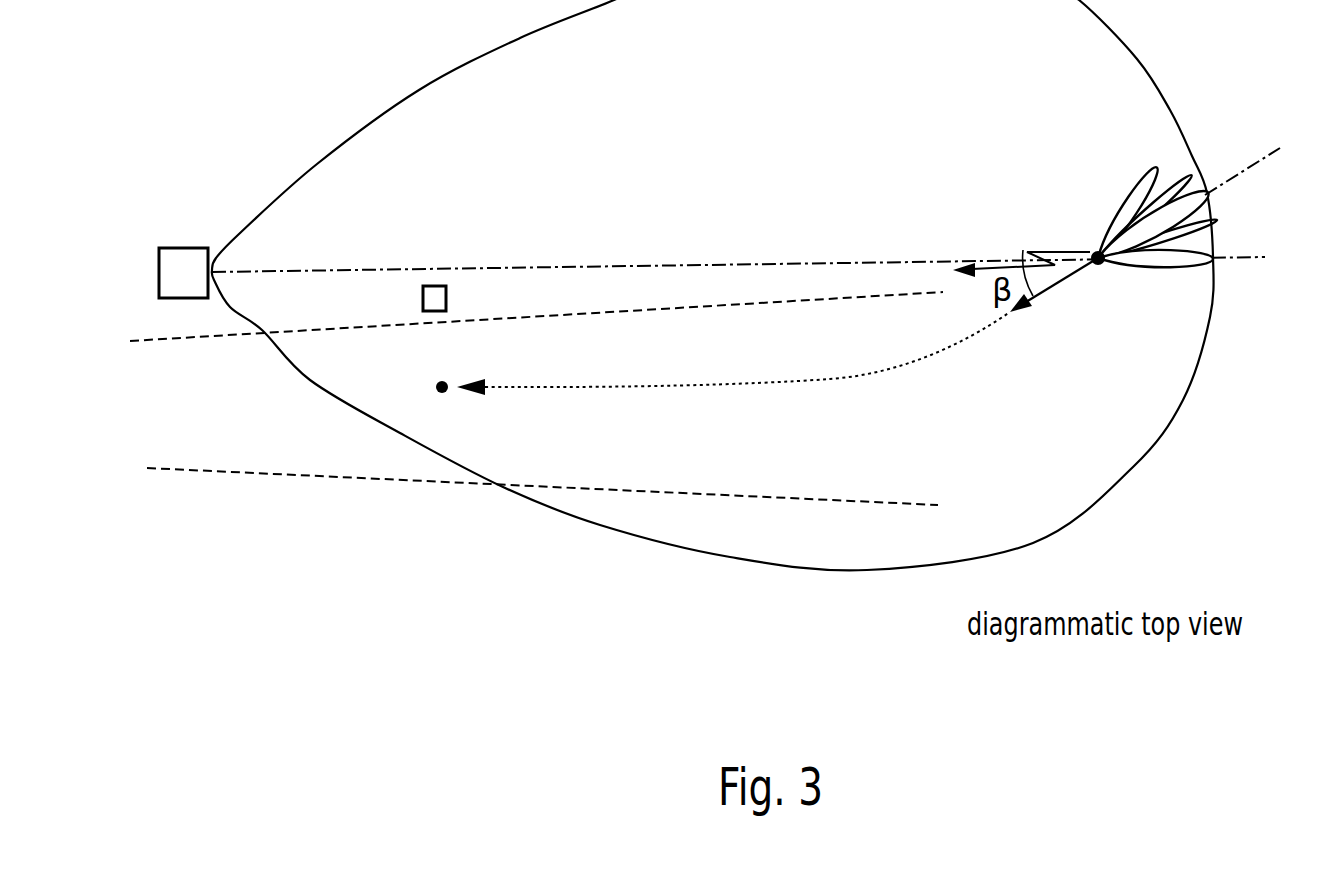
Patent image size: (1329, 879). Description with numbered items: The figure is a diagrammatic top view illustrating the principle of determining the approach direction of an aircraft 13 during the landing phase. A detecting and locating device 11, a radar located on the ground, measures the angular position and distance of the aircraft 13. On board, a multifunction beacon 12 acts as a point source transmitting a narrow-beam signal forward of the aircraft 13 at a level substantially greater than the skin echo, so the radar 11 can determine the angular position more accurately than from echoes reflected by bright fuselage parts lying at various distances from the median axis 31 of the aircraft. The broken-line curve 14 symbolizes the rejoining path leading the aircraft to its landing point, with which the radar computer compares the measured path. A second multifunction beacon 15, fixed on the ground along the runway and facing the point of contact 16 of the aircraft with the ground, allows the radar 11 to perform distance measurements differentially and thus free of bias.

The detecting and locating device 11 is at (183, 266).
The multifunction beacon 12 is at (1103, 267).
The aircraft 13 is at (1130, 193).
The rejoining path 14 is at (850, 377).
The second multifunction beacon 15 is at (437, 298).
The point of contact 16 is at (447, 382).
The median axis 31 is at (1240, 173).